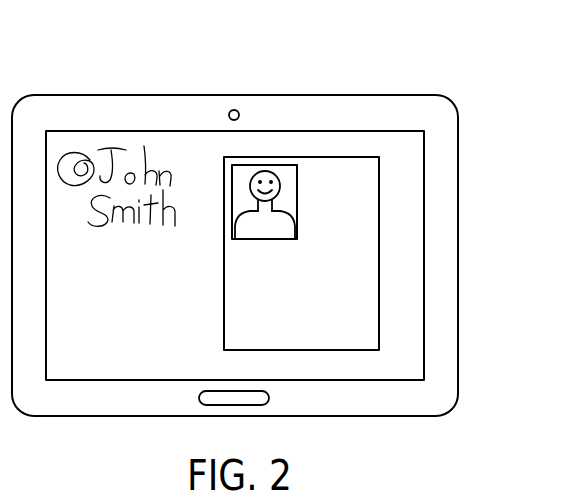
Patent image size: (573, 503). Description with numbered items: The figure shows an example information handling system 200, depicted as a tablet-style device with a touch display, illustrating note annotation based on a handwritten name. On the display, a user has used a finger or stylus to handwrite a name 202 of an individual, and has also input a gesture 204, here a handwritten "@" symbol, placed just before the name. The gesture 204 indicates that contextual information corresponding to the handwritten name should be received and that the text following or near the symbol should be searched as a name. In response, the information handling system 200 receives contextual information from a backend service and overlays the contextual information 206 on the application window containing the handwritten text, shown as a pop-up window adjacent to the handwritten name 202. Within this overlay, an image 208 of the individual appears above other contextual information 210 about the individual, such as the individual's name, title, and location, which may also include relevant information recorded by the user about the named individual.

The information handling system 200 is at (436, 89).
The handwritten name 202 is at (160, 160).
The gesture 204 is at (68, 148).
The contextual information overlay 206 is at (379, 235).
The image of the individual 208 is at (283, 165).
The other contextual information 210 is at (327, 329).